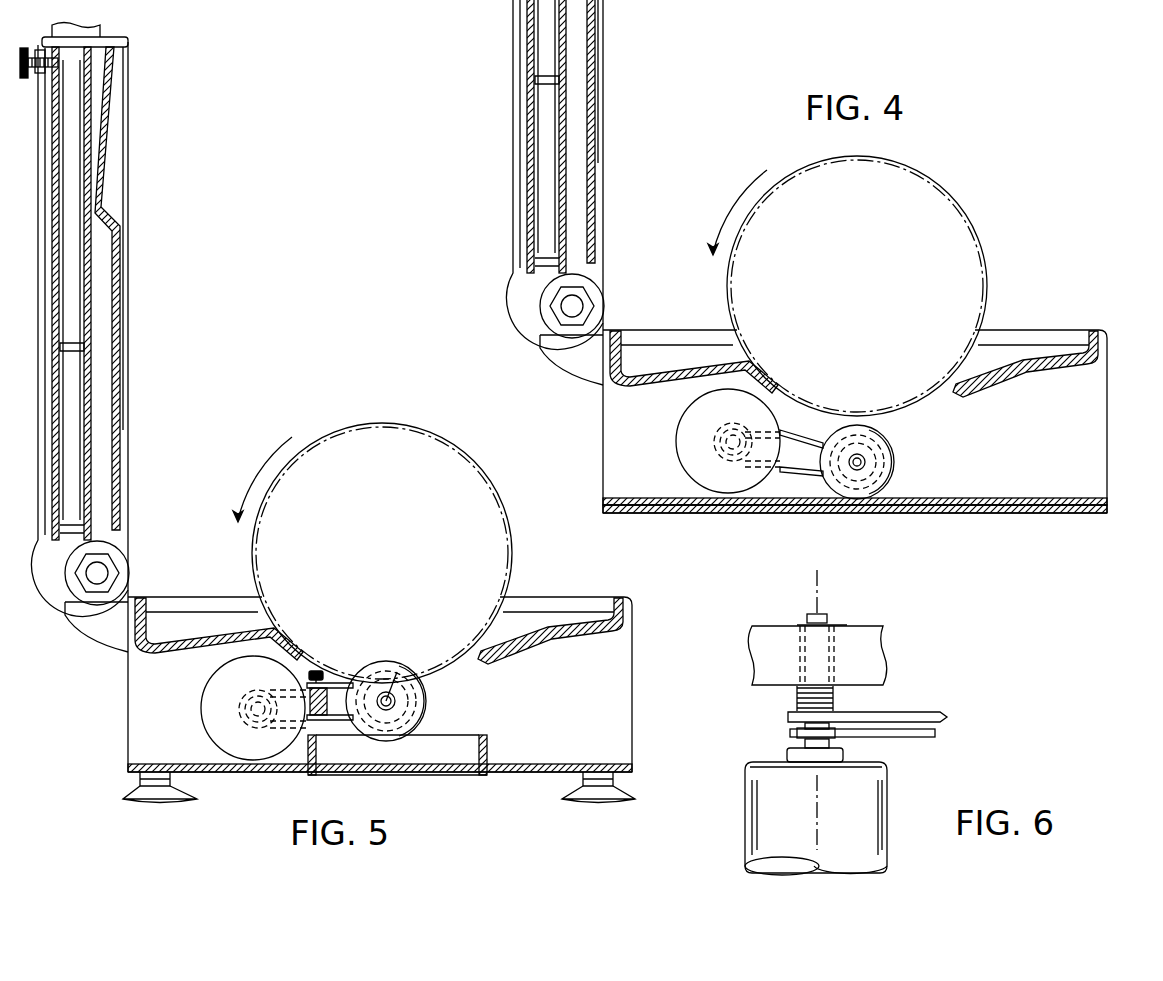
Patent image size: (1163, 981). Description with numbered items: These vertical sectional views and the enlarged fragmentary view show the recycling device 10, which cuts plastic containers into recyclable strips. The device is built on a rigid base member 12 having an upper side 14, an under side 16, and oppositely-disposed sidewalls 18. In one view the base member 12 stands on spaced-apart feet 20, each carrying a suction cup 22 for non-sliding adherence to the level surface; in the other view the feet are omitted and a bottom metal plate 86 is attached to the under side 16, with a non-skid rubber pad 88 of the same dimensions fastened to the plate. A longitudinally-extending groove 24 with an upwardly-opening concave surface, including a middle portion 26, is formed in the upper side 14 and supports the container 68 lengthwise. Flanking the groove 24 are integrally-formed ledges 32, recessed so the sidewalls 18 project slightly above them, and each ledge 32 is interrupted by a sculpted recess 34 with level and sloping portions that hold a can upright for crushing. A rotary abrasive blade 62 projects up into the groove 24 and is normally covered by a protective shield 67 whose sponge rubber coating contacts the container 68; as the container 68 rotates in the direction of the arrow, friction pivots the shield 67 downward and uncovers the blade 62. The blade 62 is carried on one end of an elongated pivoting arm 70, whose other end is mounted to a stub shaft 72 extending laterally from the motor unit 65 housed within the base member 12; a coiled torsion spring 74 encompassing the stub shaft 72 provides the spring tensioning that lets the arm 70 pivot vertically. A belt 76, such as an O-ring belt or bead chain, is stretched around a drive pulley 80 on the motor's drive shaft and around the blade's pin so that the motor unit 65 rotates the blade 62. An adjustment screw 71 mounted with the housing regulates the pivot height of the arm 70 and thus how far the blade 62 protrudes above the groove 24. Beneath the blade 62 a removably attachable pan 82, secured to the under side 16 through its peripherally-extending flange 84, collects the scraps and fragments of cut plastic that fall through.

In FIG. 5, the recycling device 10 is at (528, 774).
In FIG. 4, the recycling device 10 is at (855, 544).
In FIG. 5, the base member 12 is at (122, 730).
In FIG. 4, the base member 12 is at (576, 418).
In FIG. 5, the upper side 14 is at (630, 598).
In FIG. 4, the upper side 14 is at (1062, 317).
In FIG. 5, the under side 16 is at (469, 788).
In FIG. 4, the under side 16 is at (855, 540).
In FIG. 5, the sidewalls 18 is at (633, 672).
In FIG. 4, the sidewalls 18 is at (841, 425).
In FIG. 5, the feet 20 is at (140, 781).
In FIG. 5, the suction cup 22 is at (167, 802).
In FIG. 5, the longitudinally-extending groove 24 is at (441, 652).
In FIG. 4, the longitudinally-extending groove 24 is at (912, 352).
In FIG. 5, the middle portion 26 is at (380, 690).
In FIG. 4, the middle portion 26 is at (857, 408).
In FIG. 5, the ledges 32 is at (243, 612).
In FIG. 4, the ledges 32 is at (846, 315).
In FIG. 5, the sculpted recesses 34 is at (170, 645).
In FIG. 4, the sculpted recesses 34 is at (854, 336).
In FIG. 5, the blade 62 is at (388, 692).
In FIG. 4, the blade 62 is at (894, 472).
In FIG. 5, the motor unit 65 is at (203, 693).
In FIG. 4, the motor unit 65 is at (707, 441).
In FIG. 6, the motor unit 65 is at (745, 820).
In FIG. 5, the protective shield 67 is at (425, 692).
In FIG. 4, the protective shield 67 is at (882, 462).
In FIG. 5, the container 68 is at (370, 424).
In FIG. 4, the container 68 is at (871, 286).
In FIG. 5, the pivoting arm 70 is at (348, 680).
In FIG. 4, the pivoting arm 70 is at (801, 394).
In FIG. 6, the pivoting arm 70 is at (905, 712).
In FIG. 5, the adjustment screw 71 is at (309, 668).
In FIG. 6, the stub shaft 72 is at (820, 614).
In FIG. 6, the coiled torsion spring 74 is at (797, 700).
In FIG. 5, the belt 76 is at (322, 722).
In FIG. 4, the belt 76 is at (816, 421).
In FIG. 6, the belt 76 is at (880, 737).
In FIG. 6, the drive pulley 80 is at (805, 733).
In FIG. 5, the pan 82 is at (468, 735).
In FIG. 5, the peripherally-extending flange 84 is at (310, 772).
In FIG. 4, the bottom metal plate 86 is at (876, 493).
In FIG. 4, the non-skid rubber pad 88 is at (873, 531).